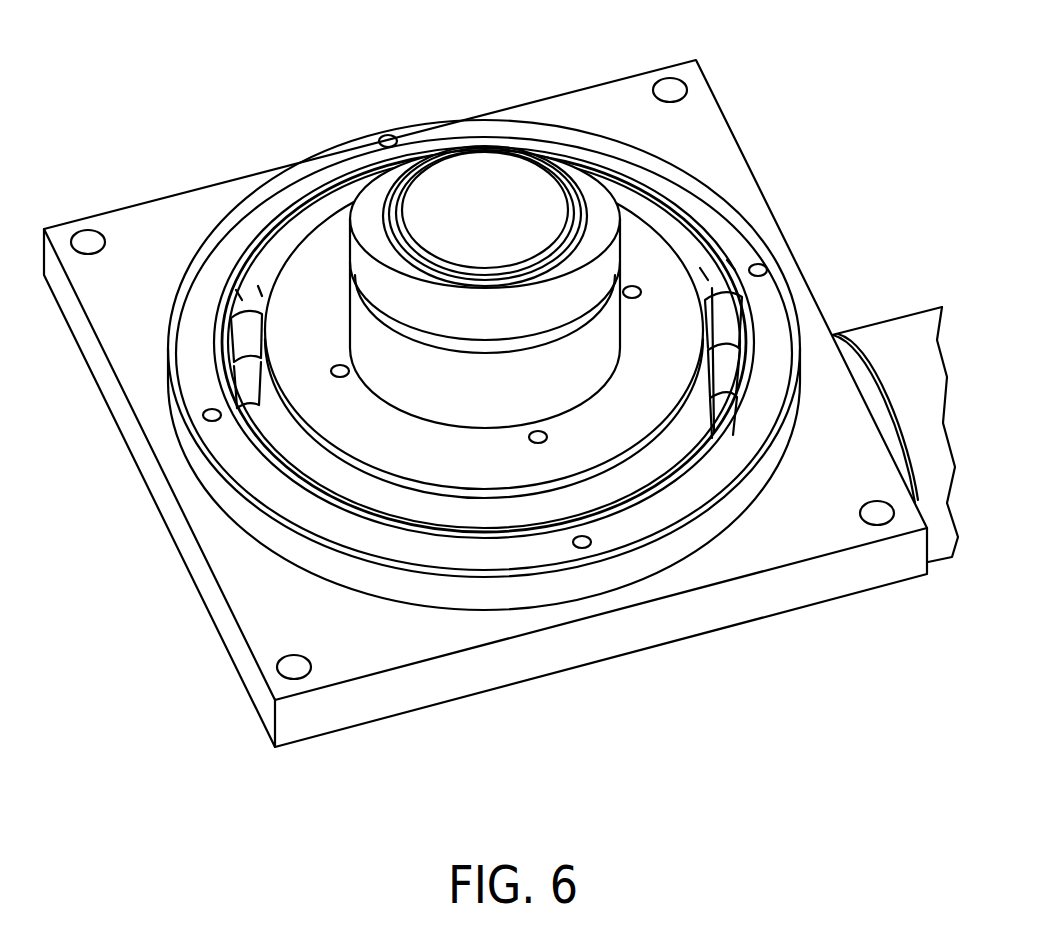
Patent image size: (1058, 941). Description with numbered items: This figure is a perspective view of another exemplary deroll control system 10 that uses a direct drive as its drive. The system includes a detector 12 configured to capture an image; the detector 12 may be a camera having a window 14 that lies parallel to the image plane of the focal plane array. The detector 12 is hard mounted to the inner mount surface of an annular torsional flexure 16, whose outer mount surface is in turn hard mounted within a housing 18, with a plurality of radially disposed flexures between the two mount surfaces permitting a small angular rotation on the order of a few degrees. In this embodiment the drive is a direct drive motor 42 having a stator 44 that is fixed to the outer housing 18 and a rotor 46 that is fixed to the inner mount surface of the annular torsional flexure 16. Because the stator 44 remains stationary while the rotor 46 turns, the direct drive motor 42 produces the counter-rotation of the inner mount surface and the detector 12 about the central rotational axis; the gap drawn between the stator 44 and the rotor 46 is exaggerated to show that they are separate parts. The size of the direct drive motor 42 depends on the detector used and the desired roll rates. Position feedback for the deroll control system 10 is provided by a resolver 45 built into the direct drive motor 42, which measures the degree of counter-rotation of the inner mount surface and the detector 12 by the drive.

The deroll control system 10 is at (287, 90).
The detector 12 is at (575, 198).
The window 14 is at (463, 178).
The annular torsional flexure 16 is at (242, 338).
The housing 18 is at (118, 246).
The direct drive motor 42 is at (192, 731).
The stator 44 is at (250, 472).
The resolver 45 is at (480, 534).
The rotor 46 is at (408, 462).